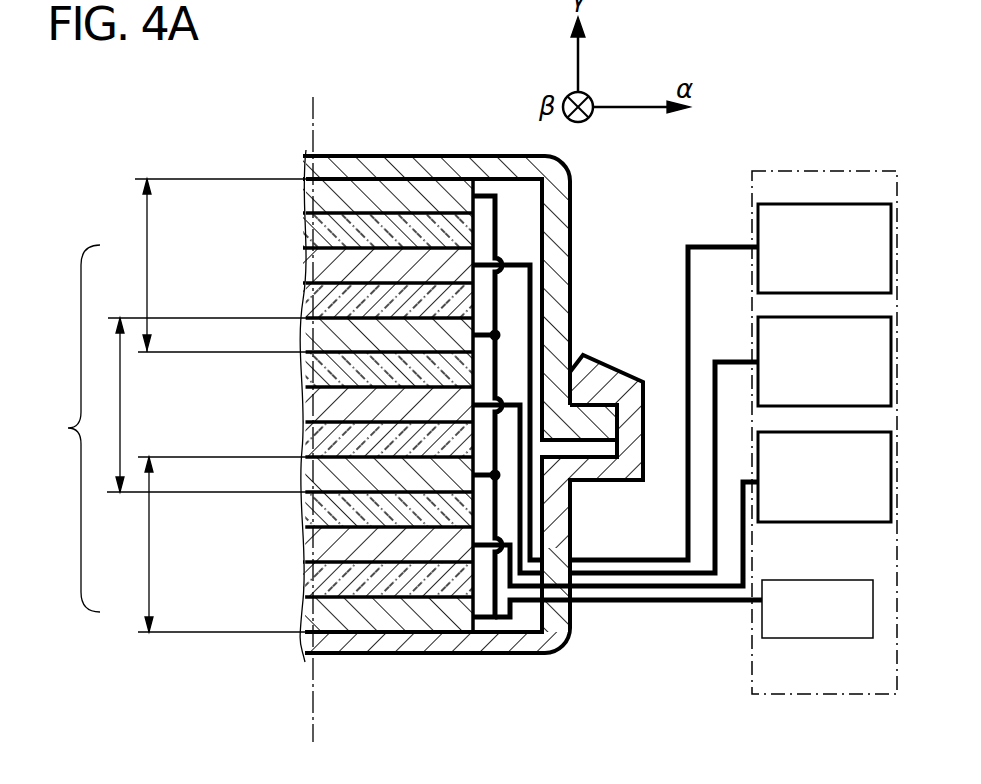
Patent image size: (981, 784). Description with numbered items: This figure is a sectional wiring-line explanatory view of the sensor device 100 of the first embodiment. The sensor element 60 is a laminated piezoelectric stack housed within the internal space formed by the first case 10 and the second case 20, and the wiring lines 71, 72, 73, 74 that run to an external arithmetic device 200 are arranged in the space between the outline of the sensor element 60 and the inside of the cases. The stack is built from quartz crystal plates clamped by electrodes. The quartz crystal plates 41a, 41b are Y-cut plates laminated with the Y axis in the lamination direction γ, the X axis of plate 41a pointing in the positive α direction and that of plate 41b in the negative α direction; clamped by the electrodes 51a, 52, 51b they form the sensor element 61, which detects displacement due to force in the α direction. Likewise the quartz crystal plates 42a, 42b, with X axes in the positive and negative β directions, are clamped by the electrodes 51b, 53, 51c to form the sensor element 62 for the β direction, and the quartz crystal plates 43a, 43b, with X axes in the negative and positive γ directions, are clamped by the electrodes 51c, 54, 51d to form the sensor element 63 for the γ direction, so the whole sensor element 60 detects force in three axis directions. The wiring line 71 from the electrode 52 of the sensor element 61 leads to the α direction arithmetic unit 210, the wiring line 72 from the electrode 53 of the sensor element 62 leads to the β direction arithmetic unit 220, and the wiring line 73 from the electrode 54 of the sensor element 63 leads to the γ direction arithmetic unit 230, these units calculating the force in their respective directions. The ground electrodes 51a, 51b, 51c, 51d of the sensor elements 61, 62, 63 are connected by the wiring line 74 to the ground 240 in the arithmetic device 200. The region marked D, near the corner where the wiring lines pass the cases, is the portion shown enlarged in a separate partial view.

The pressure sensor (pressure detection device) 100 is at (368, 92).
The first case 10 is at (569, 214).
The second case 20 is at (552, 655).
The quartz crystal plate 41a is at (325, 230).
The quartz crystal plate 41b is at (325, 300).
The quartz crystal plate 42a is at (325, 370).
The quartz crystal plate 42b is at (325, 440).
The quartz crystal plate 43a is at (325, 510).
The quartz crystal plate 43b is at (325, 580).
The ground electrode 51a is at (325, 196).
The ground electrode 51b is at (325, 335).
The ground electrode 51c is at (325, 475).
The ground electrode 51d is at (325, 615).
The electrode 52 is at (325, 265).
The electrode 53 is at (325, 405).
The electrode 54 is at (325, 545).
The sensor element 60 is at (68, 428).
The sensor element 61 is at (206, 265).
The sensor element 62 is at (198, 405).
The sensor element 63 is at (211, 544).
The wiring line 71 is at (688, 473).
The wiring line 72 is at (715, 493).
The wiring line 73 is at (743, 586).
The wiring line 74 is at (643, 602).
The arithmetic device 200 is at (798, 170).
The α direction arithmetic unit 210 is at (803, 203).
The β direction arithmetic unit 220 is at (803, 316).
The γ direction arithmetic unit 230 is at (803, 431).
The ground (GND) 240 is at (790, 579).
The D portion D is at (591, 625).